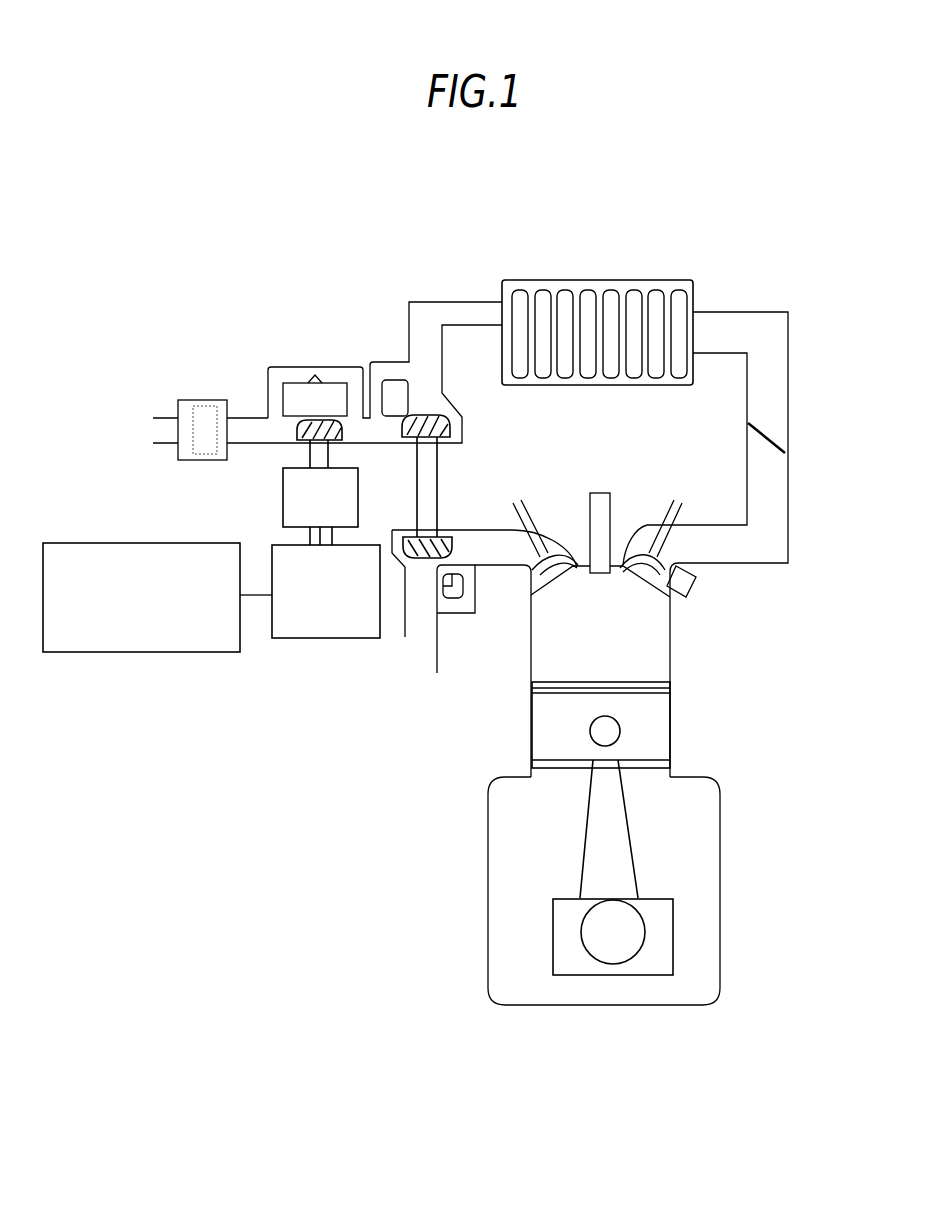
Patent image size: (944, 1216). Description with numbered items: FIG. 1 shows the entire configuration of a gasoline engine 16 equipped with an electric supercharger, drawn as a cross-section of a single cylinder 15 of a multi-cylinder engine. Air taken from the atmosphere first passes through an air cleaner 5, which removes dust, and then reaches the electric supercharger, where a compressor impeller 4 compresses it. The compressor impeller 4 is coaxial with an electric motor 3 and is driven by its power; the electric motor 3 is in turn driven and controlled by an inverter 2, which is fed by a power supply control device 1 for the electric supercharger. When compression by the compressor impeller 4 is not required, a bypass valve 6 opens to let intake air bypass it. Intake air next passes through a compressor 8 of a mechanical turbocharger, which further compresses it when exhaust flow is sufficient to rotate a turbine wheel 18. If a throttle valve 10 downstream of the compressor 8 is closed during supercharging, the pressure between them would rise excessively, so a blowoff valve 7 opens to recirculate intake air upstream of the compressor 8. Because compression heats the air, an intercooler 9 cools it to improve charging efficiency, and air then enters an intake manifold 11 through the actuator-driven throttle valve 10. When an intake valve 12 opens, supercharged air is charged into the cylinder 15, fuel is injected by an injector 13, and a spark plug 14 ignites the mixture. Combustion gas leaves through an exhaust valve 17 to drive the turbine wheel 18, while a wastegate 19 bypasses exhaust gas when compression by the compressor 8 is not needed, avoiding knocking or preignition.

The power supply control device 1 is at (213, 652).
The inverter 2 is at (343, 638).
The electric motor 3 is at (283, 495).
The compressor impeller 4 is at (285, 441).
The air cleaner 5 is at (180, 400).
The bypass valve 6 is at (299, 367).
The blowoff valve 7 is at (376, 362).
The compressor 8 is at (446, 476).
The intercooler 9 is at (586, 280).
The throttle valve 10 is at (792, 427).
The intake manifold 11 is at (792, 582).
The intake valve 12 is at (666, 510).
The injector 13 is at (703, 601).
The spark plug 14 is at (612, 493).
The cylinder 15 is at (686, 655).
The gasoline engine 16 is at (703, 728).
The exhaust valve 17 is at (546, 522).
The turbine wheel 18 is at (453, 531).
The wastegate 19 is at (466, 619).